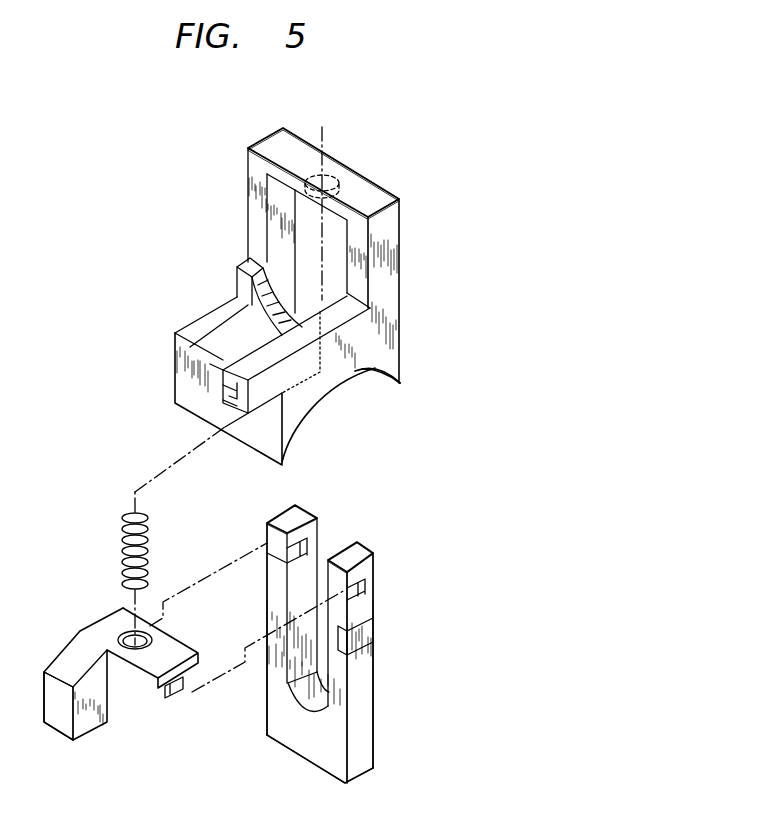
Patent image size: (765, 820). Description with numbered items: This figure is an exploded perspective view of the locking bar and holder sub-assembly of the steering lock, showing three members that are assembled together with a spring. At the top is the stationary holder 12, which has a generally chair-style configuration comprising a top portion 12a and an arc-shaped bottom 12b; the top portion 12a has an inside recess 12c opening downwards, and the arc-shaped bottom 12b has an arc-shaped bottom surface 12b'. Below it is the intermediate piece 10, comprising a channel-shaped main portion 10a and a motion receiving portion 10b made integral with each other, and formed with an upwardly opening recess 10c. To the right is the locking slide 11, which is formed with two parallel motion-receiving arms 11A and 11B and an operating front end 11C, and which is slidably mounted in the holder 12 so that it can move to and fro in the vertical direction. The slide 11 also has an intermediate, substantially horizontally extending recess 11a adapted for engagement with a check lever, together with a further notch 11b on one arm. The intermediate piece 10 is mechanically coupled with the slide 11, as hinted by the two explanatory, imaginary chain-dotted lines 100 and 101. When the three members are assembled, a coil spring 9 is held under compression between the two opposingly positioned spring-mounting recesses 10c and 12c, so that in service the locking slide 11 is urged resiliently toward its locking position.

The coil spring 9 is at (122, 542).
The intermediate piece 10 is at (148, 712).
The channel-shaped main portion 10a is at (122, 620).
The motion receiving portion 10b is at (60, 725).
The upwardly opening recess 10c is at (124, 637).
The locking slide 11 is at (376, 735).
The motion-receiving arm 11A is at (275, 590).
The motion-receiving arm 11B is at (363, 600).
The operating front end 11C is at (290, 752).
The horizontally extending recess 11a is at (358, 634).
The notch 11b is at (293, 550).
The stationary holder 12 is at (400, 263).
The top portion 12a is at (362, 186).
The arc-shaped bottom 12b is at (367, 396).
The arc-shaped bottom surface 12b' is at (328, 415).
The inside recess 12c is at (326, 170).
The chain-dotted line 100 is at (233, 558).
The chain-dotted line 101 is at (250, 643).